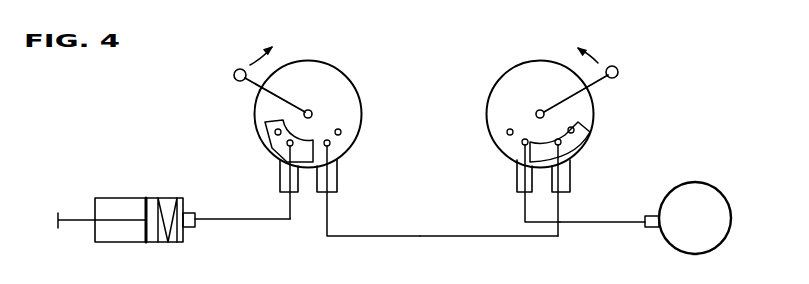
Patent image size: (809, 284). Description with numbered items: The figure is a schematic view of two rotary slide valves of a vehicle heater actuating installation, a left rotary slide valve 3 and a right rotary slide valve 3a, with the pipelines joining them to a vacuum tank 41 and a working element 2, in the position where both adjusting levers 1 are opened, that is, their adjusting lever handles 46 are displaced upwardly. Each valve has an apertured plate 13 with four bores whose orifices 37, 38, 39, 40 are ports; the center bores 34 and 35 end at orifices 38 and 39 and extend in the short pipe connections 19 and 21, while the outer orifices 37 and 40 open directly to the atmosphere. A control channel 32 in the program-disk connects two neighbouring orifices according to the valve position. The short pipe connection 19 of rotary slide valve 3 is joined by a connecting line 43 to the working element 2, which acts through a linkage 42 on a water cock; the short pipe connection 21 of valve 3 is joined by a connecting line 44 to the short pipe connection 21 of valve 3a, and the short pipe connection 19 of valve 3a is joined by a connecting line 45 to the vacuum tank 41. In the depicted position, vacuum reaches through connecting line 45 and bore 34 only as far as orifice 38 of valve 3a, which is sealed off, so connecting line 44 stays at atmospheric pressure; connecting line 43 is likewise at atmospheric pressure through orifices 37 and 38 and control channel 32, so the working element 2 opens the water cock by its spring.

The adjusting lever 1 is at (256, 88).
The working element 2 is at (128, 197).
The rotary slide valve 3 is at (429, 125).
The other rotary slide valve 3a is at (544, 34).
The apertured plate 13 is at (327, 70).
The short pipe connection 19 is at (280, 183).
The short pipe connection 21 is at (338, 183).
The control channel 32 is at (578, 137).
The center bore 34 is at (290, 204).
The center bore 35 is at (329, 212).
The orifice 37 is at (275, 131).
The orifice 38 is at (287, 144).
The orifice 39 is at (330, 144).
The orifice 40 is at (342, 131).
The vacuum tank 41 is at (712, 196).
The linkage 42 is at (70, 212).
The connecting line 43 is at (235, 218).
The connecting line 44 is at (453, 234).
The connecting line 45 is at (628, 221).
The adjusting lever handle 46 is at (234, 74).